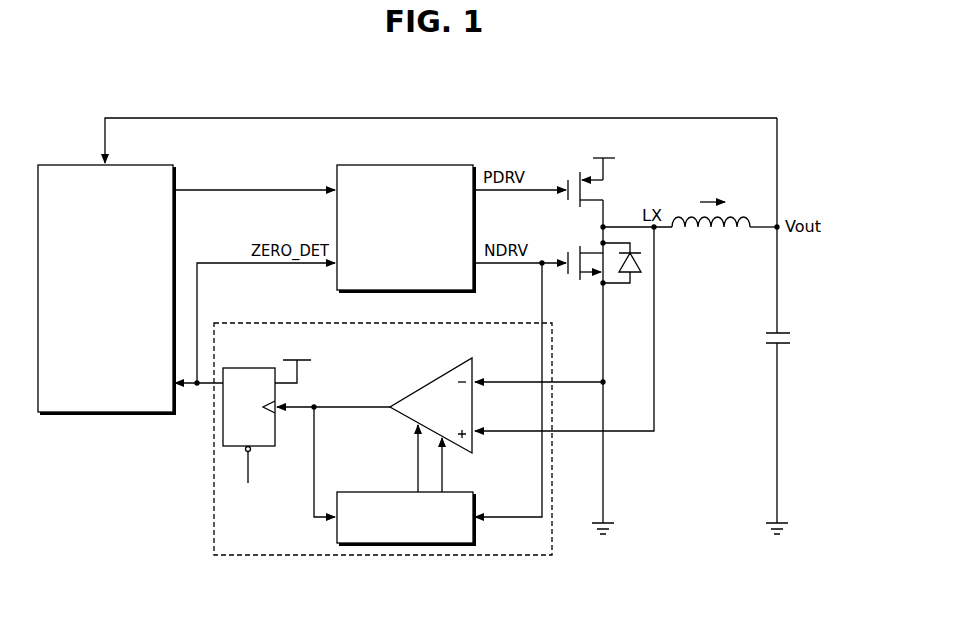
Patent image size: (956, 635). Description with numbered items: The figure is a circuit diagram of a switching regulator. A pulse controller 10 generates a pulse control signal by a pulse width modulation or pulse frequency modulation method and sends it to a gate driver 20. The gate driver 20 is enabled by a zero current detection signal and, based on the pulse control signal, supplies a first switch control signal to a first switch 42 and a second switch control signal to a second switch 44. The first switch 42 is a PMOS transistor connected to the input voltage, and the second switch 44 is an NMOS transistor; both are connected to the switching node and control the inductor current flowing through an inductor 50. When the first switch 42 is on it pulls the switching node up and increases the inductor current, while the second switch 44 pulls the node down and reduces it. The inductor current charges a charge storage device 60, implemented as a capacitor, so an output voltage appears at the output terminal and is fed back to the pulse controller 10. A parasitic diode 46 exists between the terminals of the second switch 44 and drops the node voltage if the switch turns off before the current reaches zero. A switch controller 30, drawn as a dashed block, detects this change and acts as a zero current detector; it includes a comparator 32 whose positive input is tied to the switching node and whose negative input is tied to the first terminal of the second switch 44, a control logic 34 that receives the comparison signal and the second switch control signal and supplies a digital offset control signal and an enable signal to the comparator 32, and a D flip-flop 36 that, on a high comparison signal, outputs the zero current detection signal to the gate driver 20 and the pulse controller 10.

The pulse controller 10 is at (70, 163).
The gate driver 20 is at (404, 164).
The switch controller 30 is at (500, 557).
The comparator 32 is at (433, 383).
The control logic 34 is at (406, 557).
The D flip-flop 36 is at (248, 367).
The first switch 42 is at (576, 172).
The second switch 44 is at (575, 283).
The parasitic diode 46 is at (637, 262).
The inductor 50 is at (742, 212).
The charge storage device 60 is at (792, 338).